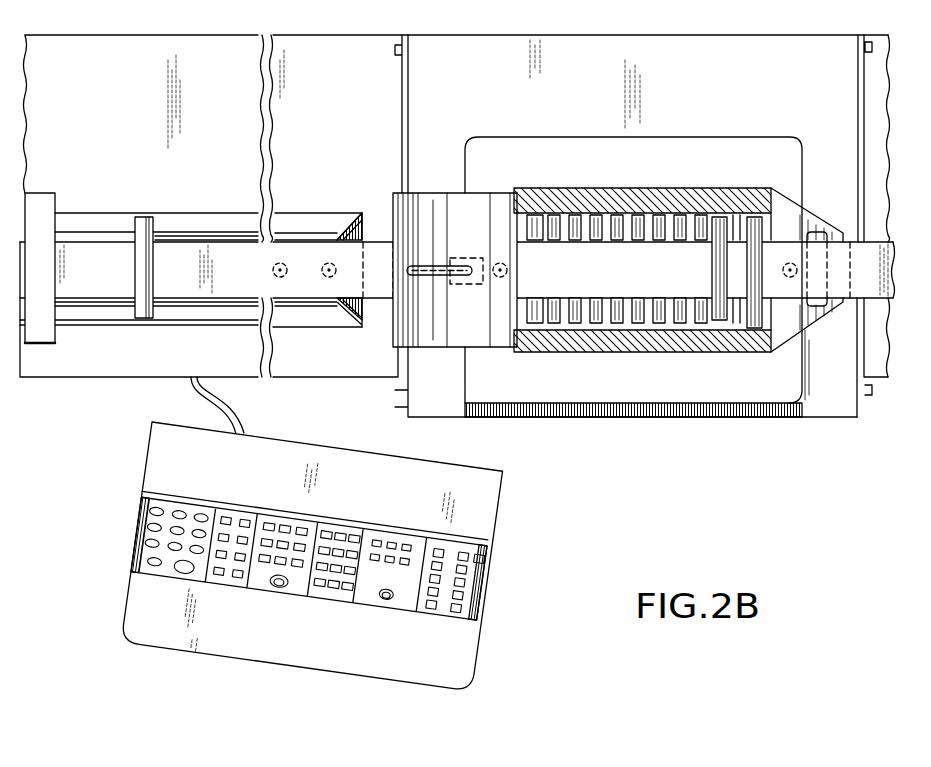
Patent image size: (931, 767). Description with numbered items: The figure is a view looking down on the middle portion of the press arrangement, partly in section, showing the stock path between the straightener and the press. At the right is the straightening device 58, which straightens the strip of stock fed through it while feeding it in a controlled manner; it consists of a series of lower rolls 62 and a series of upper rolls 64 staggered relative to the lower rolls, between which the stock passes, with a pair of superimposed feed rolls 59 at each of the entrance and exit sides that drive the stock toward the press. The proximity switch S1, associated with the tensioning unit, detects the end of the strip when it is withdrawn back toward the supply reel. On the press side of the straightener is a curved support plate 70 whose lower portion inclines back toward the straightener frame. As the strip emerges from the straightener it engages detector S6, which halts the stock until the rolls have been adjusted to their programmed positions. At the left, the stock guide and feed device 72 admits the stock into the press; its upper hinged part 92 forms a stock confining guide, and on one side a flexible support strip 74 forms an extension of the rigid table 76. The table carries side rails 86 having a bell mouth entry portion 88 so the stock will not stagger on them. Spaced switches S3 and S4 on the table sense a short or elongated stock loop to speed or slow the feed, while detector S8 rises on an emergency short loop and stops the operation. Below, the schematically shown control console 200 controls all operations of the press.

The stock guide and feed device 72 is at (47, 194).
The upper hinged part 92 is at (144, 226).
The side rails 86 is at (233, 230).
The flexible support strip 74 is at (88, 322).
The rigid table 76 is at (318, 312).
The bell mouth entry portion 88 is at (362, 305).
The curved support plate 70 is at (478, 337).
The straightening device 58 is at (612, 191).
The feed rolls 59 is at (537, 220).
The lower rolls 62 is at (738, 318).
The upper rolls 64 is at (724, 230).
The proximity switch S1 is at (793, 262).
The switch S3 is at (283, 262).
The switch S4 is at (332, 262).
The detector S6 is at (498, 263).
The detector S8 is at (455, 264).
The control console 200 is at (293, 657).